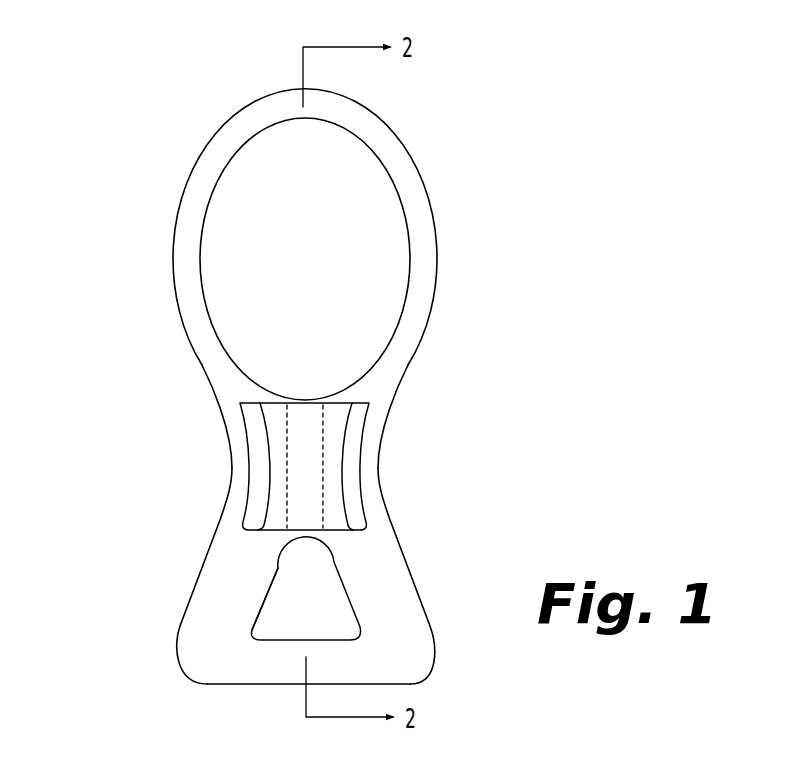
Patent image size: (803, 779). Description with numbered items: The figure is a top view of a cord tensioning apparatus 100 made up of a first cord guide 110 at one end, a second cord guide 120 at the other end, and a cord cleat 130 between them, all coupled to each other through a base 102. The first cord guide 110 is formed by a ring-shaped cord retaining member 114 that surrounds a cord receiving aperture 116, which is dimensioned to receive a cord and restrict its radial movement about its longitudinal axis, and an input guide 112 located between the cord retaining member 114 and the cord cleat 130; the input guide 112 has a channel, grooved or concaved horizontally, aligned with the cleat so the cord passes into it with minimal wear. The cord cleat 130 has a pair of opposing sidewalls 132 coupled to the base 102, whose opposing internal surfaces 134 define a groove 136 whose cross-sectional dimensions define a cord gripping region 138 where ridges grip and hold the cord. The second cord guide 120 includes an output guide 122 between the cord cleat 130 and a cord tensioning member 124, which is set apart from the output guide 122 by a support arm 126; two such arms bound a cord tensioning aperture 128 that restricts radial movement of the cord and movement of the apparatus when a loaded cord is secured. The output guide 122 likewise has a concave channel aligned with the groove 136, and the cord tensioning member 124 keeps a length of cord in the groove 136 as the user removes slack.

The cord tensioning apparatus 100 is at (124, 100).
The base 102 is at (236, 423).
The first cord guide 110 is at (473, 48).
The input guide 112 is at (315, 392).
The cord retaining member 114 is at (424, 236).
The cord receiving aperture 116 is at (356, 231).
The second cord guide 120 is at (232, 765).
The output guide 122 is at (299, 553).
The cord tensioning member 124 is at (278, 668).
The support arm 126 is at (196, 612).
The cord tensioning aperture 128 is at (277, 590).
The cord cleat 130 is at (507, 387).
The opposing sidewalls 132 is at (352, 423).
The opposing internal surfaces 134 is at (276, 432).
The groove 136 is at (288, 454).
The cord gripping region 138 is at (311, 503).